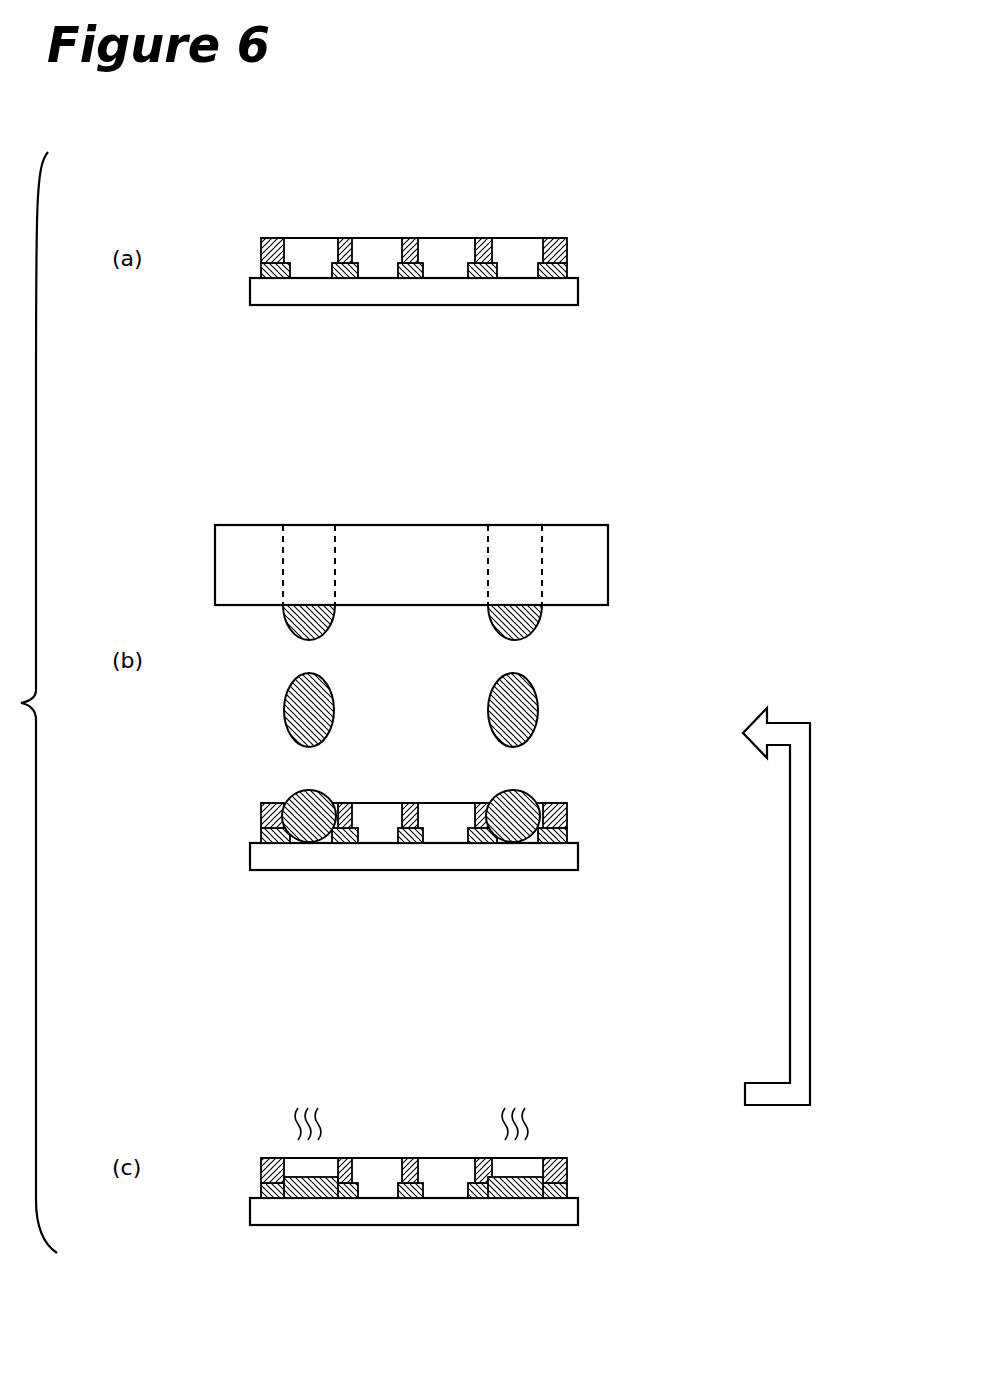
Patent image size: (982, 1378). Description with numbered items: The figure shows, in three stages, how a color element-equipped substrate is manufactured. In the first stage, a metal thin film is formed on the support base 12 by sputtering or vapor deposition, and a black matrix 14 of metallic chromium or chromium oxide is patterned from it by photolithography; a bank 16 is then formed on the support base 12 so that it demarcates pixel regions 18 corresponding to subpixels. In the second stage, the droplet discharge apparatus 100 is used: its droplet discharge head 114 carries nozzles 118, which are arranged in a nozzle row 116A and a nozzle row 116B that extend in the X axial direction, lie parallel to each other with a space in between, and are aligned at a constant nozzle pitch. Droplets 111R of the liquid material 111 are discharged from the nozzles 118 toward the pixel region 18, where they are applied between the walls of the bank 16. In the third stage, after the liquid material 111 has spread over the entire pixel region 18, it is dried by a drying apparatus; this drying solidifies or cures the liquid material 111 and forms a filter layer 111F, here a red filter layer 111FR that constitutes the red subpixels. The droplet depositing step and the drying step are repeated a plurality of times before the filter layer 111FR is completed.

The support base 12 is at (584, 294).
The black matrix 14 is at (340, 278).
The bank 16 is at (558, 237).
The pixel region 18 is at (378, 250).
The droplet discharge apparatus 100 is at (480, 551).
The liquid material 111 is at (425, 929).
The droplet 111R is at (288, 693).
The filter layer 111F is at (412, 1142).
The red filter layer 111FR is at (305, 1185).
The droplet discharge head 114 is at (593, 567).
The nozzle row 116A is at (361, 551).
The nozzle row 116B is at (569, 552).
The nozzle 118 is at (466, 551).